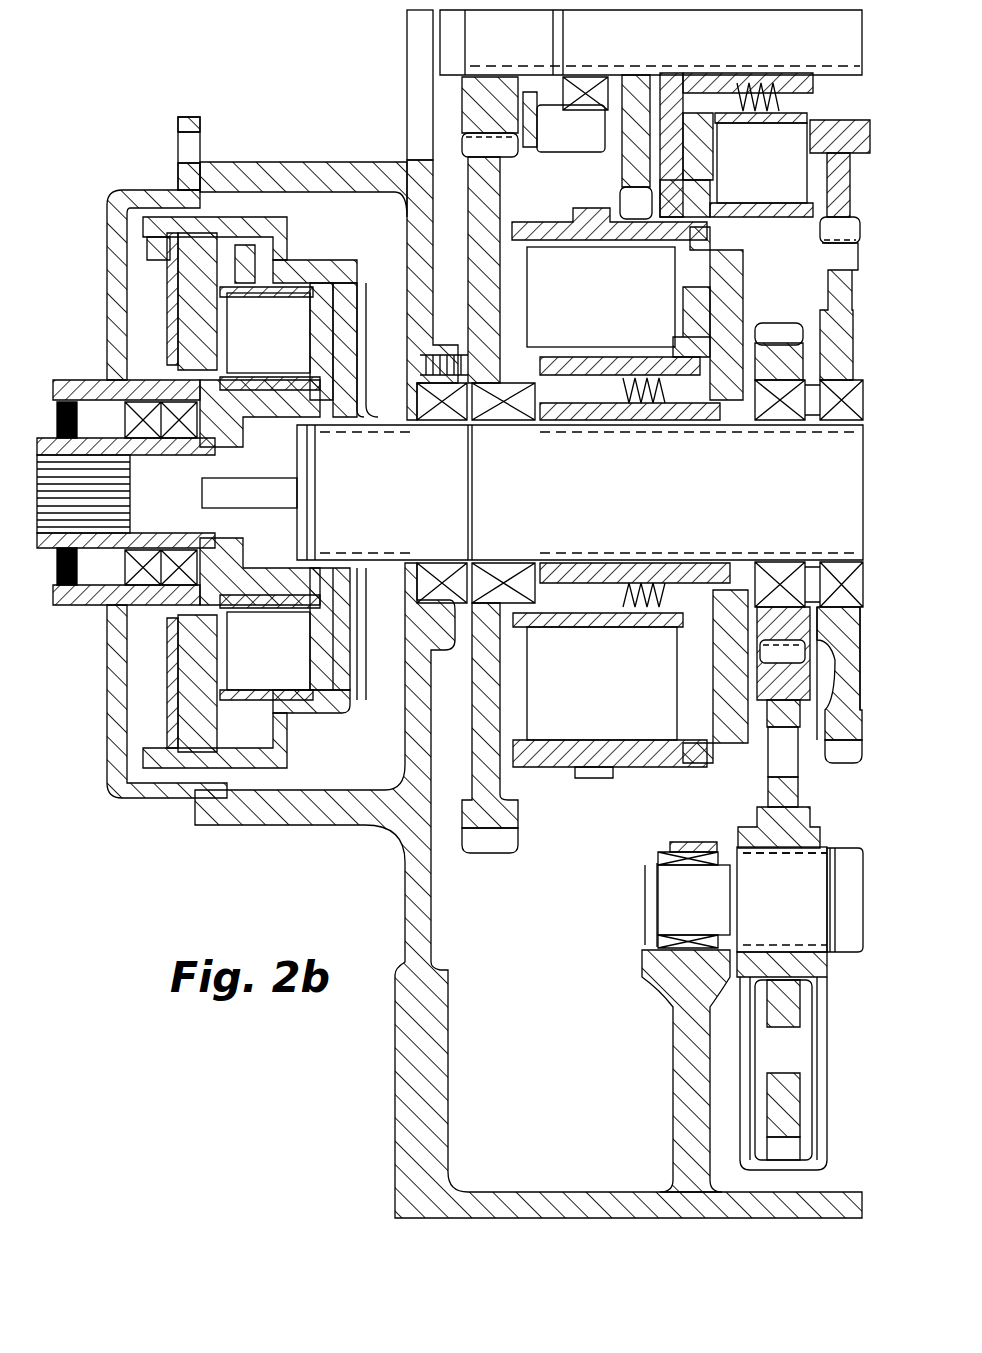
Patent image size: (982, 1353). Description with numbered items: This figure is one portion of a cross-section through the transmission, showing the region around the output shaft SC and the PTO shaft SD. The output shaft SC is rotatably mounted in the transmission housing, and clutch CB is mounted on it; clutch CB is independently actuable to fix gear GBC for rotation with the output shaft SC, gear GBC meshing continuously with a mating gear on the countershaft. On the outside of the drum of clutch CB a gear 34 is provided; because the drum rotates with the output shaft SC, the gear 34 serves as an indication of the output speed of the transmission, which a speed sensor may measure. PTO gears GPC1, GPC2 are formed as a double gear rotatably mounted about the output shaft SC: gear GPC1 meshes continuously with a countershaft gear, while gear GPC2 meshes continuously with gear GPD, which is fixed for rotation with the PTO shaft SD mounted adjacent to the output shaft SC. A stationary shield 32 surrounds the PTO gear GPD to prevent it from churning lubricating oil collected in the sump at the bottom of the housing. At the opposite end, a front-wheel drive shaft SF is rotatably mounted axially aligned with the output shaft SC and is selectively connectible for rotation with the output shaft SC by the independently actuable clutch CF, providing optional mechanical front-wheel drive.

The front-wheel drive shaft SF is at (45, 440).
The clutch CF is at (284, 351).
The gear GBC is at (497, 172).
The clutch CB is at (600, 305).
The output shaft SC is at (600, 502).
The PTO gear GPC1 is at (840, 660).
The PTO gear GPC2 is at (777, 653).
The gear 34 is at (600, 780).
The PTO shaft SD is at (805, 915).
The stationary shield 32 is at (750, 1070).
The gear GPD is at (750, 1127).